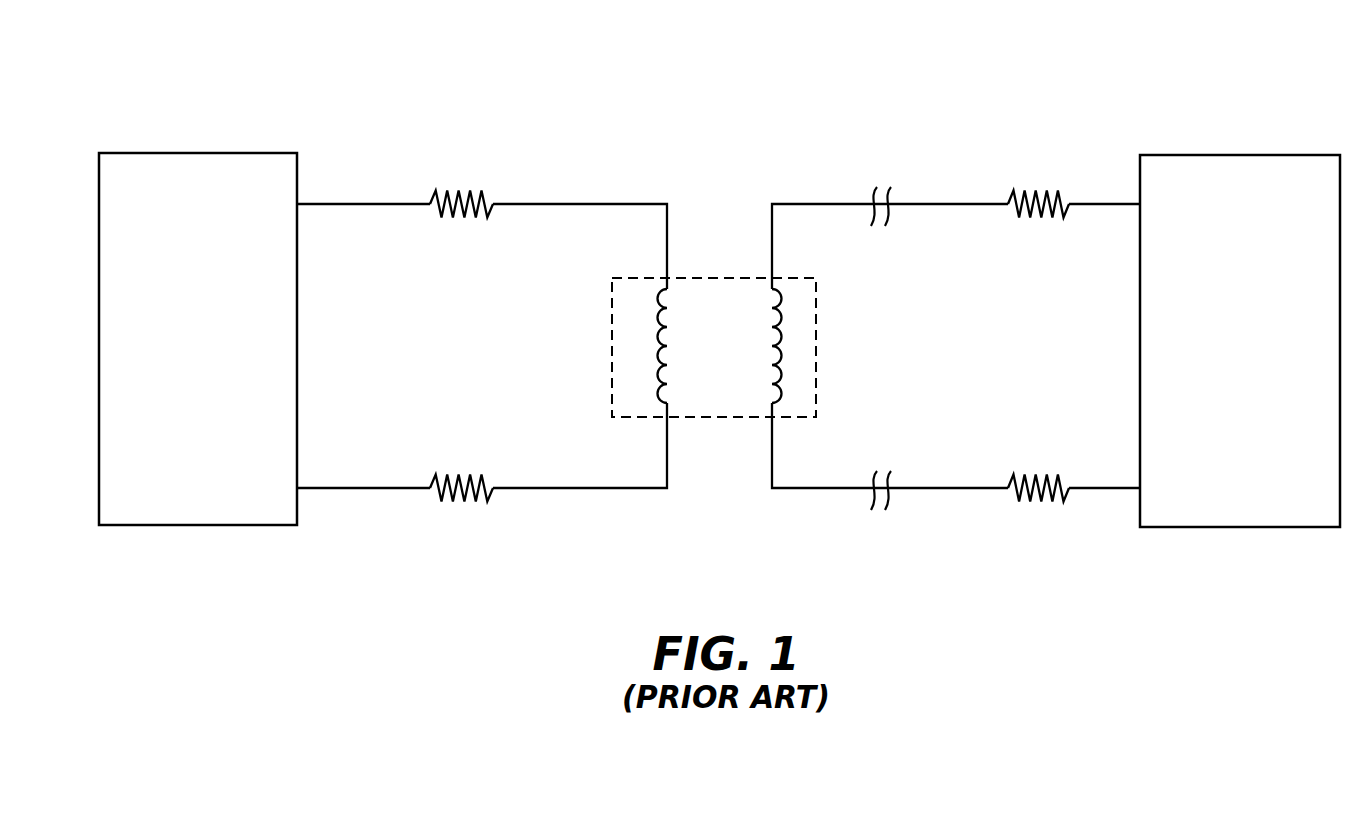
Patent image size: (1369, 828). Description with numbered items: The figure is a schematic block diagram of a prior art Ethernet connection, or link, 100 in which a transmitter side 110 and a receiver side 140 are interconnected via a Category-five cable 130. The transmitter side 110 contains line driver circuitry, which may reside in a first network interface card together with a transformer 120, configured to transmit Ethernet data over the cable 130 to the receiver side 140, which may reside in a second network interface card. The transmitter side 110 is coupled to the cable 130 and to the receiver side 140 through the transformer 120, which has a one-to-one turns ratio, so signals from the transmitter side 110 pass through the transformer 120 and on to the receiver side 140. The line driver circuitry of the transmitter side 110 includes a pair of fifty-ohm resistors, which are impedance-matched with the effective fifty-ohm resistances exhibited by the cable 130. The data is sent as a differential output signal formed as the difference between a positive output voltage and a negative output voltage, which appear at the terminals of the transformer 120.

The Ethernet connection 100 is at (690, 121).
The transmitter side 110 is at (180, 378).
The transformer 120 is at (714, 416).
The Category-5 cable 130 is at (950, 367).
The receiver side 140 is at (1220, 378).